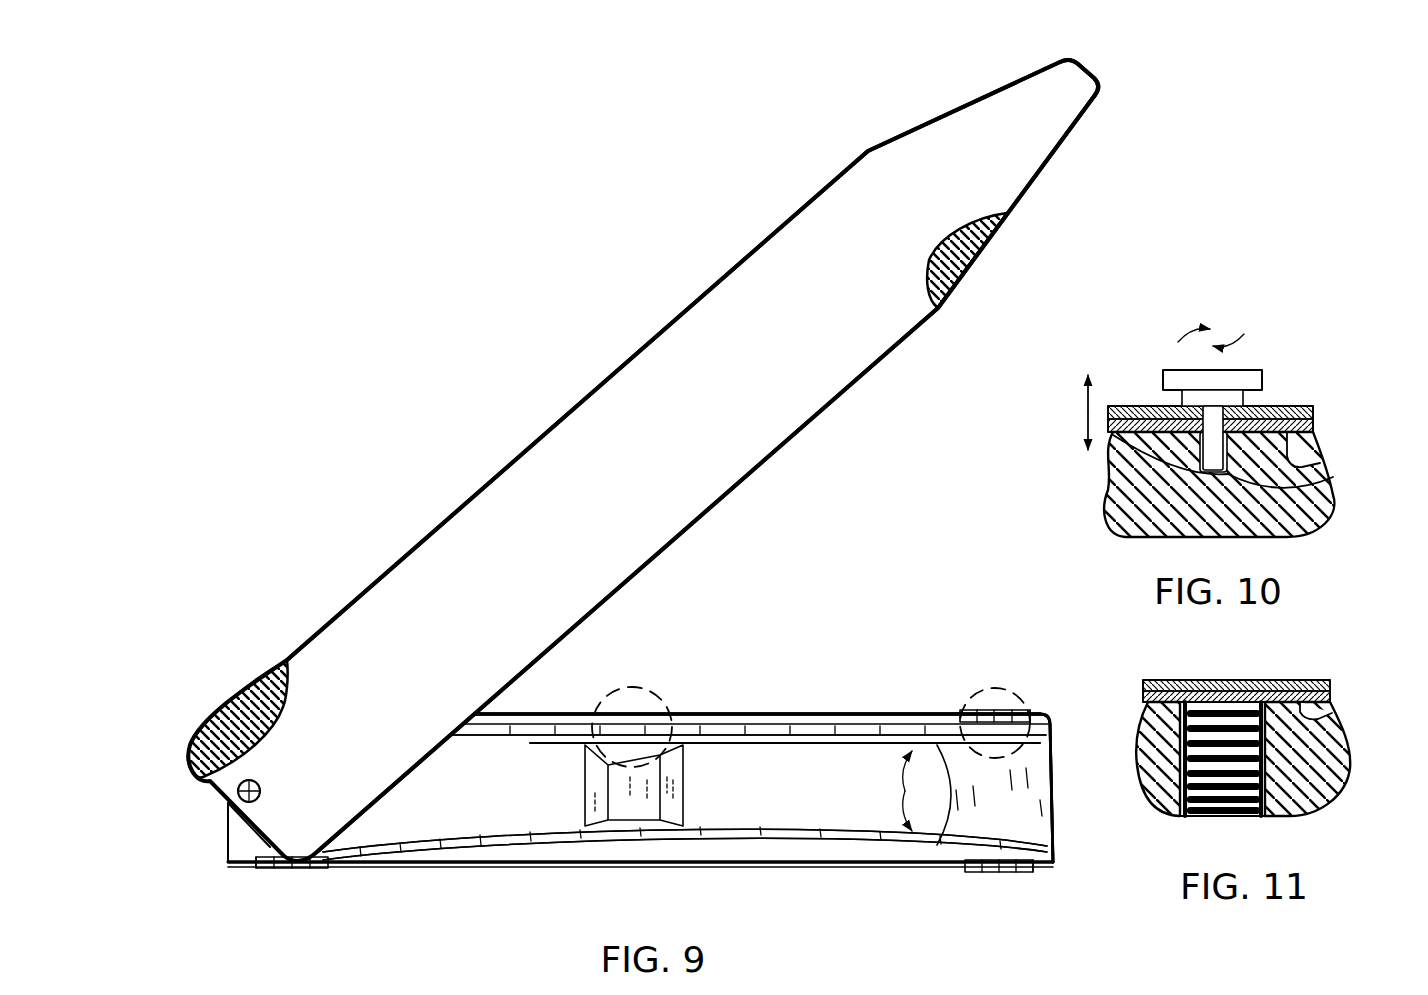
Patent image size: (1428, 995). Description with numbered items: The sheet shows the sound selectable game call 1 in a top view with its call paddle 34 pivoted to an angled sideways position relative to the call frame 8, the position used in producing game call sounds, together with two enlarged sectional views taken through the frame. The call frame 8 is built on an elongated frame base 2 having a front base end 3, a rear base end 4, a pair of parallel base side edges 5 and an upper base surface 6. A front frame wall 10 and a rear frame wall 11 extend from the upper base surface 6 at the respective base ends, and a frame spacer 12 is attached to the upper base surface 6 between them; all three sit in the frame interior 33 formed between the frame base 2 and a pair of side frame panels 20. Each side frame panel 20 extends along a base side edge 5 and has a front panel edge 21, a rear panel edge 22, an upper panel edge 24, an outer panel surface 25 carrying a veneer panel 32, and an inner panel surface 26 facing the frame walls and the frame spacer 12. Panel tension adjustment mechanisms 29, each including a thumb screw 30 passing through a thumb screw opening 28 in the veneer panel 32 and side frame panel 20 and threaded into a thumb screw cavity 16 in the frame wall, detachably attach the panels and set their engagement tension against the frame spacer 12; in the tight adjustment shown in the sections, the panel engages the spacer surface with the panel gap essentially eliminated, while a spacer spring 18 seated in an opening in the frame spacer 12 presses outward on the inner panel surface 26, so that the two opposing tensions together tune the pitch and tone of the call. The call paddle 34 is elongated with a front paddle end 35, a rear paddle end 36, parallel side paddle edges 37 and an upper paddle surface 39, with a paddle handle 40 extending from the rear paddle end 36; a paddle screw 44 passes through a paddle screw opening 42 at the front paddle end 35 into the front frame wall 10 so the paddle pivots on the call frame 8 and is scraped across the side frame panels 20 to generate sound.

In FIG. 9, the sound selectable game call 1 is at (328, 308).
In FIG. 9, the frame base 2 is at (905, 703).
In FIG. 9, the front base end 3 is at (227, 850).
In FIG. 9, the rear base end 4 is at (1055, 808).
In FIG. 9, the base side edges 5 is at (862, 715).
In FIG. 9, the upper base surface 6 is at (800, 801).
In FIG. 9, the call frame 8 is at (795, 664).
In FIG. 9, the front frame wall 10 is at (992, 684).
In FIG. 9, the rear frame wall 11 is at (628, 684).
In FIG. 10, the rear frame wall 11 is at (1140, 512).
In FIG. 9, the frame spacer 12 is at (684, 780).
In FIG. 11, the frame spacer 12 is at (1153, 763).
In FIG. 10, the thumb screw cavity 16 is at (1280, 493).
In FIG. 11, the thumb screw cavity 16 is at (1253, 790).
In FIG. 11, the spacer spring 18 is at (1233, 806).
In FIG. 9, the side frame panels 20 is at (905, 791).
In FIG. 10, the side frame panels 20 is at (1320, 420).
In FIG. 11, the side frame panels 20 is at (1335, 690).
In FIG. 9, the front panel edge 21 is at (228, 823).
In FIG. 9, the rear panel edge 22 is at (1050, 733).
In FIG. 9, the upper panel edge 24 is at (796, 743).
In FIG. 9, the outer panel surface 25 is at (735, 742).
In FIG. 10, the outer panel surface 25 is at (1292, 406).
In FIG. 11, the outer panel surface 25 is at (1275, 680).
In FIG. 9, the inner panel surface 26 is at (550, 745).
In FIG. 10, the inner panel surface 26 is at (1318, 460).
In FIG. 11, the inner panel surface 26 is at (1333, 708).
In FIG. 10, the thumb screw opening 28 is at (1200, 432).
In FIG. 9, the panel tension adjustment mechanism 29 is at (250, 877).
In FIG. 10, the panel tension adjustment mechanism 29 is at (1158, 353).
In FIG. 9, the thumb screw 30 is at (313, 868).
In FIG. 10, the thumb screw 30 is at (1243, 380).
In FIG. 9, the veneer panel 32 is at (552, 718).
In FIG. 10, the veneer panel 32 is at (1118, 406).
In FIG. 11, the veneer panel 32 is at (1183, 680).
In FIG. 9, the frame interior 33 is at (557, 816).
In FIG. 9, the call paddle 34 is at (545, 424).
In FIG. 9, the front paddle end 35 is at (202, 770).
In FIG. 9, the rear paddle end 36 is at (870, 150).
In FIG. 9, the side paddle edges 37 is at (655, 331).
In FIG. 9, the upper paddle surface 39 is at (525, 549).
In FIG. 9, the paddle handle 40 is at (1037, 128).
In FIG. 9, the paddle screw opening 42 is at (261, 789).
In FIG. 9, the paddle screw 44 is at (262, 783).